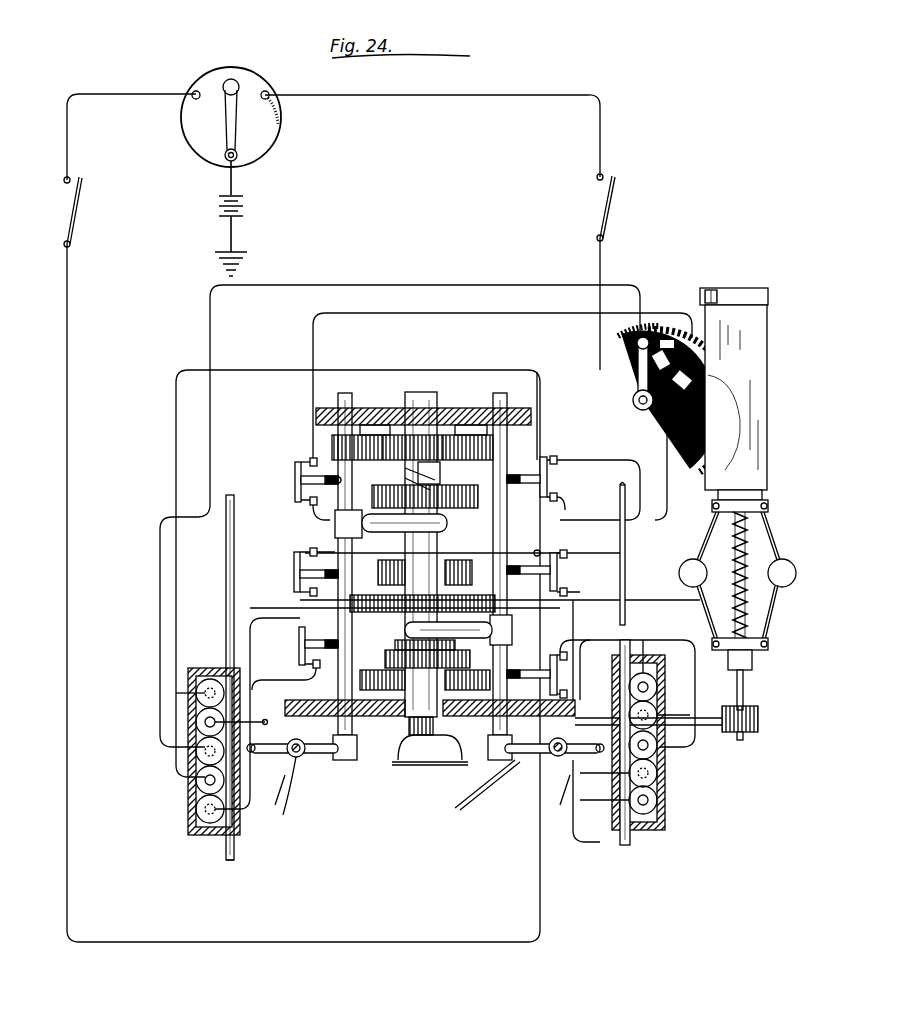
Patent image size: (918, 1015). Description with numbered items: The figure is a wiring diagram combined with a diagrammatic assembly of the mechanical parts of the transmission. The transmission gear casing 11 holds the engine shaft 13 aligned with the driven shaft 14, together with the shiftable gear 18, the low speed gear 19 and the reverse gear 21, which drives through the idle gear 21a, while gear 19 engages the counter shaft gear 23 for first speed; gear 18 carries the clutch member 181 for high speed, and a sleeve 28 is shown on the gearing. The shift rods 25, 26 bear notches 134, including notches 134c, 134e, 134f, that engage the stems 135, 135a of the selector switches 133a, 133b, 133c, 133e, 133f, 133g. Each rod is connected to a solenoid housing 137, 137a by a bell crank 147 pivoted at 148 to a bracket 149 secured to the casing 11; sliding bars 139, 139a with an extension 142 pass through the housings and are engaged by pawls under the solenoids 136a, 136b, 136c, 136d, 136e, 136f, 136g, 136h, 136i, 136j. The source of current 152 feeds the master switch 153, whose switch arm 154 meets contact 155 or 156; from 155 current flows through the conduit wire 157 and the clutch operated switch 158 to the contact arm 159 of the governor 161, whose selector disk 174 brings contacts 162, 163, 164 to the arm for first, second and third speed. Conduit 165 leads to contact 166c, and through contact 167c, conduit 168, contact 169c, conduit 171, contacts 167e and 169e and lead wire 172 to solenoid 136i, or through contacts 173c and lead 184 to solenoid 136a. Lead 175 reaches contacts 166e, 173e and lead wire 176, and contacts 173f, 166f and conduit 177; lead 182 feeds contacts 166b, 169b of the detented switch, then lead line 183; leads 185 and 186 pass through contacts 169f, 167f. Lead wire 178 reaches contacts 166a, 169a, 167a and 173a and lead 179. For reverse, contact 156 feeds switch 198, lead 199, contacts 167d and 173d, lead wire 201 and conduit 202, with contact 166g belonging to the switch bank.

The transmission gear casing 11 is at (408, 410).
The engine shaft 13 is at (412, 398).
The driven shaft 14 is at (400, 722).
The shiftable gear 18 is at (445, 492).
The low speed gear 19 is at (462, 595).
The reverse gear 21 is at (462, 666).
The idle gear 21a is at (368, 685).
The counter shaft gear 23 is at (445, 528).
The shift rod 25 is at (362, 410).
The shift rod 26 is at (494, 405).
The sleeve 28 is at (512, 630).
The selector switch 133a is at (295, 480).
The selector switch 133b is at (294, 574).
The selector switch 133c is at (299, 644).
The selector switch 133e is at (560, 578).
The selector switch 133f is at (548, 478).
The selector switch 133g is at (560, 672).
The notches 134 is at (337, 450).
The notch 134c is at (338, 757).
The notch 134e is at (507, 540).
The notch 134f is at (512, 472).
The switch stems 135 is at (333, 553).
The switch stem 135a is at (589, 687).
The solenoid 136a is at (200, 690).
The solenoid 136b is at (200, 718).
The solenoid 136c is at (200, 750).
The solenoid 136d is at (200, 782).
The solenoid 136e is at (202, 814).
The solenoid 136f is at (648, 665).
The solenoid 136g is at (655, 710).
The solenoid 136h is at (657, 746).
The solenoid 136i is at (657, 775).
The solenoid 136j is at (657, 802).
The solenoid housing 137 is at (200, 838).
The solenoid housing 137a is at (650, 832).
The sliding bar 139 is at (232, 860).
The sliding bar 139a is at (622, 847).
The bar extension 142 is at (225, 500).
The bell crank 147 is at (420, 799).
The pivot 148 is at (555, 757).
The bracket 149 is at (505, 768).
The source of current 152 is at (243, 208).
The master switch 153 is at (186, 140).
The switch arm 154 is at (231, 135).
The contact 155 is at (268, 91).
The contact 156 is at (190, 90).
The conduit wire 157 is at (488, 96).
The switch 158 is at (610, 198).
The contact arm 159 is at (640, 378).
The governor 161 is at (765, 445).
The contact 162 is at (630, 348).
The contact 163 is at (668, 335).
The contact 164 is at (690, 350).
The conduit 165 is at (510, 287).
The contact 166a is at (312, 462).
The contact 166b is at (300, 550).
The contact 166c is at (335, 640).
The contact 166e is at (524, 545).
The contact 166f is at (540, 457).
The contact 166g is at (550, 668).
The contact 167a is at (295, 500).
The contact 167c is at (262, 680).
The contact 167d is at (448, 826).
The contact 167e is at (597, 581).
The contact 167f is at (578, 499).
The conduit 168 is at (250, 608).
The contact 169a is at (308, 460).
The contact 169b is at (308, 552).
The contact 169c is at (308, 592).
The contact 169e is at (596, 546).
The contact 169f is at (556, 458).
The conduit 171 is at (350, 600).
The lead wire 172 is at (626, 565).
The contact 173a is at (340, 482).
The contact 173c is at (312, 666).
The contact 173d is at (485, 740).
The contact 173e is at (524, 586).
The contact 173f is at (537, 496).
The selector disk 174 is at (655, 430).
The lead 175 is at (660, 500).
The lead wire 176 is at (580, 640).
The conduit 177 is at (492, 372).
The lead wire 178 is at (520, 316).
The lead 179 is at (158, 540).
The clutch member 181 is at (445, 408).
The lead 182 is at (400, 540).
The lead line 183 is at (248, 628).
The lead 184 is at (195, 680).
The lead 185 is at (626, 530).
The lead wire 186 is at (640, 640).
The clutch operated switch 198 is at (77, 210).
The lead 199 is at (67, 365).
The lead wire 201 is at (744, 684).
The conduit 202 is at (686, 720).